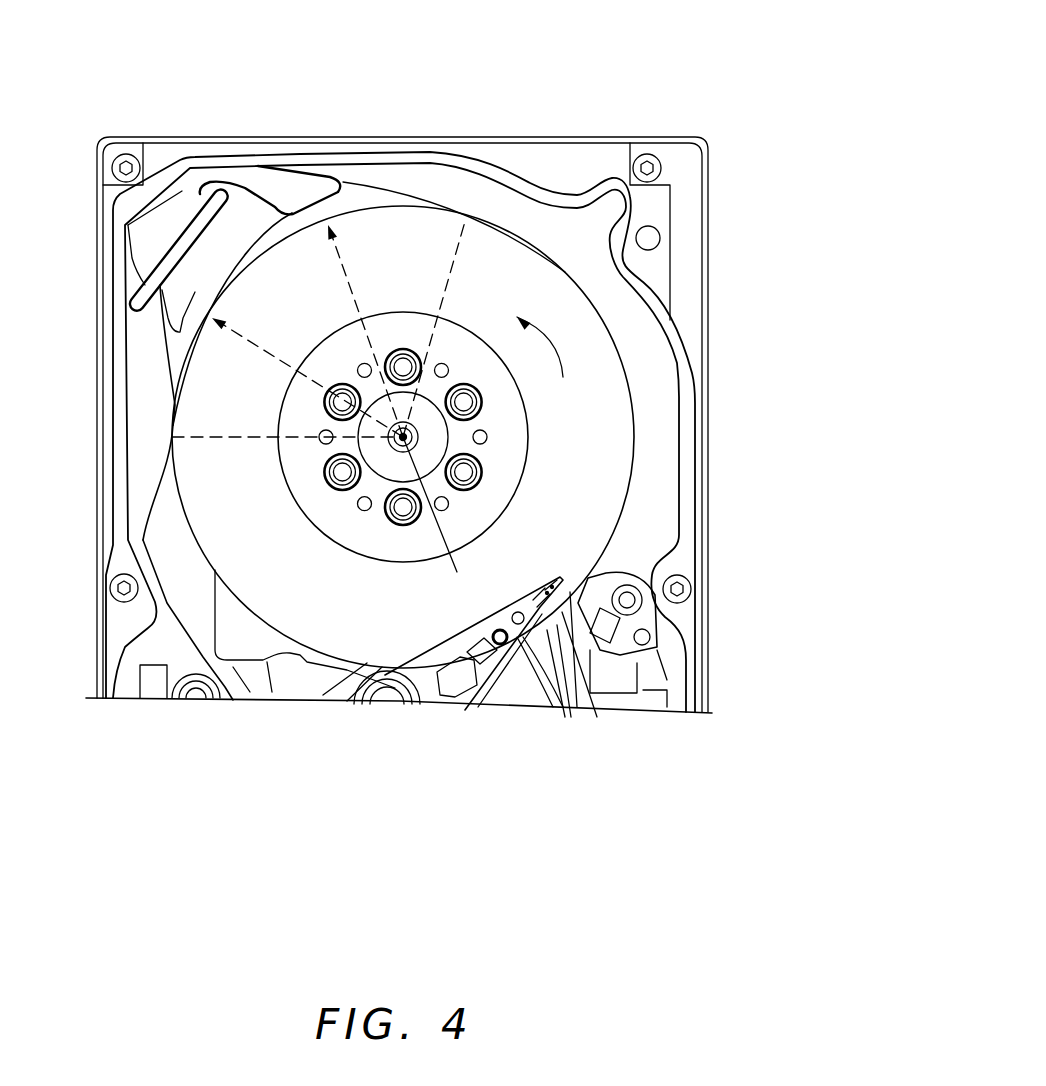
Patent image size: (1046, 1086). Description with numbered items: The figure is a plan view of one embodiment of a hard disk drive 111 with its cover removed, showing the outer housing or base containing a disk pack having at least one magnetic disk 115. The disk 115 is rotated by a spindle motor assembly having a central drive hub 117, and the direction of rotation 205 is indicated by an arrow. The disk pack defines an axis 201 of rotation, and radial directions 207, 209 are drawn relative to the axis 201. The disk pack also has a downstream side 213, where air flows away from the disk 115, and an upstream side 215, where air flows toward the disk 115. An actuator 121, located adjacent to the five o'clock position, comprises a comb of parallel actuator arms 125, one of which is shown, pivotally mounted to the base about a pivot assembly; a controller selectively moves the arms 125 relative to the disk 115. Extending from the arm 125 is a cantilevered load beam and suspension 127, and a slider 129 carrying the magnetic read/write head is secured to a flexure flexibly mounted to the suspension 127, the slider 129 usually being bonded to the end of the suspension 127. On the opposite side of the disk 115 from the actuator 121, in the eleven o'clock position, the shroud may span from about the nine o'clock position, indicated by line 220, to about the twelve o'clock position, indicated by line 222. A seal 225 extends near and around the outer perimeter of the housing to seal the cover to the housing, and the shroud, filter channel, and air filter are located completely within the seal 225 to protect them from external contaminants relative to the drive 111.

The drive 111 is at (800, 48).
The magnetic disk 115 is at (611, 452).
The central drive hub 117 is at (536, 437).
The actuator 121 is at (480, 740).
The actuator arm 125 is at (458, 710).
The load beam and suspension 127 is at (540, 612).
The slider 129 is at (576, 648).
The axis 201 is at (440, 523).
The rotation 205 is at (560, 355).
The radial direction 207 is at (345, 261).
The radial direction 209 is at (255, 342).
The downstream side 213 is at (388, 191).
The upstream side 215 is at (174, 400).
The line 220 is at (238, 440).
The line 222 is at (445, 298).
The seal 225 is at (515, 184).